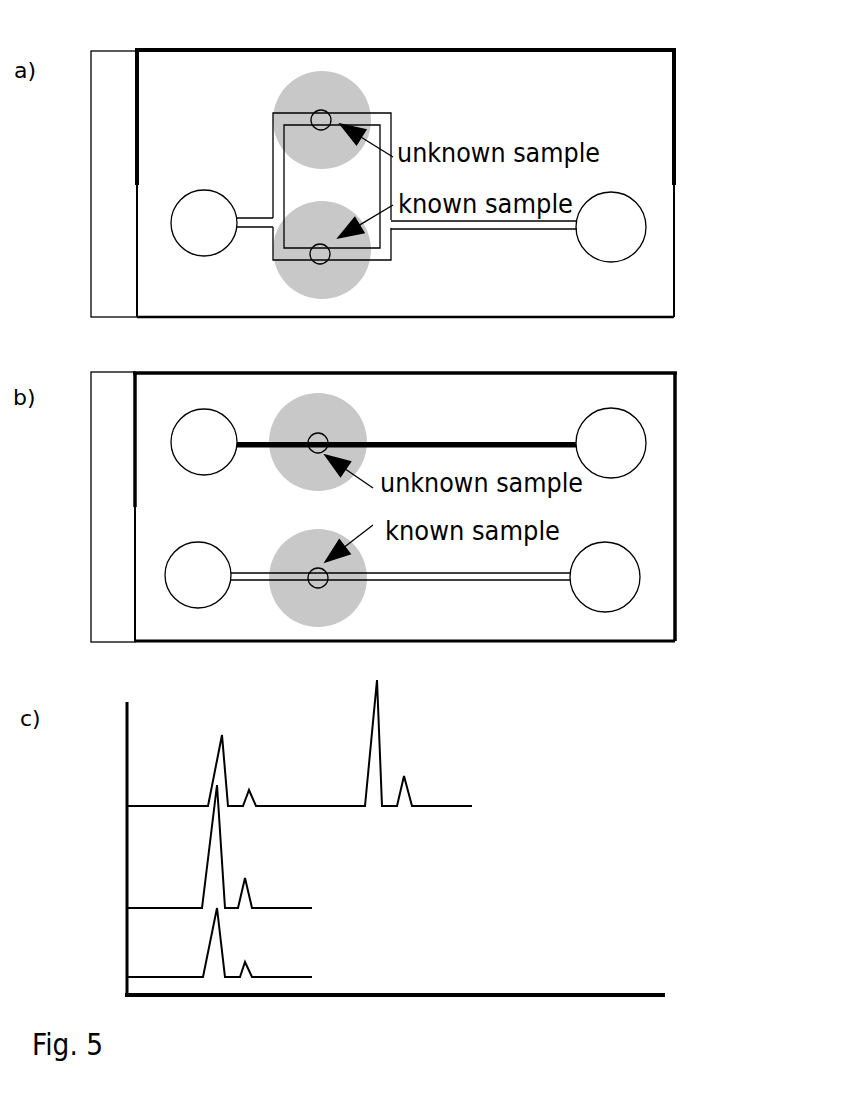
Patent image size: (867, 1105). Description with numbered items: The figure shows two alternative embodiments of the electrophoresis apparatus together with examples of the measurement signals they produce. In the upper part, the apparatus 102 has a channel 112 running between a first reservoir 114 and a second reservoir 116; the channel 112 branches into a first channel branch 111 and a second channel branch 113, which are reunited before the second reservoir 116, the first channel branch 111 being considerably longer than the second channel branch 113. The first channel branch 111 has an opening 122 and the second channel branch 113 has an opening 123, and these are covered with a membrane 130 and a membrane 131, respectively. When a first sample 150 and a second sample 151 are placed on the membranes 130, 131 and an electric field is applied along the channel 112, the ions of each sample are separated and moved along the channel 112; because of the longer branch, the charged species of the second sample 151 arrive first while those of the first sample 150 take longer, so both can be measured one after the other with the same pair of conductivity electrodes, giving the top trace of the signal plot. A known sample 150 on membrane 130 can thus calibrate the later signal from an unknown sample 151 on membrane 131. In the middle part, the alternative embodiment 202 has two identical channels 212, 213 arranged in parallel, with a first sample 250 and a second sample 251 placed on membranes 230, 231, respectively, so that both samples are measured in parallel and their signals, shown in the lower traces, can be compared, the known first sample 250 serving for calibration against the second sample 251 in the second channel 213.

The apparatus 102 is at (717, 56).
The first channel branch 111 is at (387, 130).
The channel 112 is at (483, 229).
The second channel branch 113 is at (390, 250).
The first reservoir 114 is at (206, 237).
The second reservoir 116 is at (609, 238).
The opening 122 is at (311, 118).
The opening 123 is at (311, 261).
The membrane 130 is at (347, 98).
The membrane 131 is at (333, 279).
The alternative embodiment 202 is at (694, 425).
The channel 212 is at (482, 440).
The channel 213 is at (470, 578).
The membrane 230 is at (345, 416).
The membrane 231 is at (343, 598).
The first sample 150 is at (405, 732).
The second sample 151 is at (242, 748).
The first sample 250 is at (256, 854).
The second sample 251 is at (258, 942).